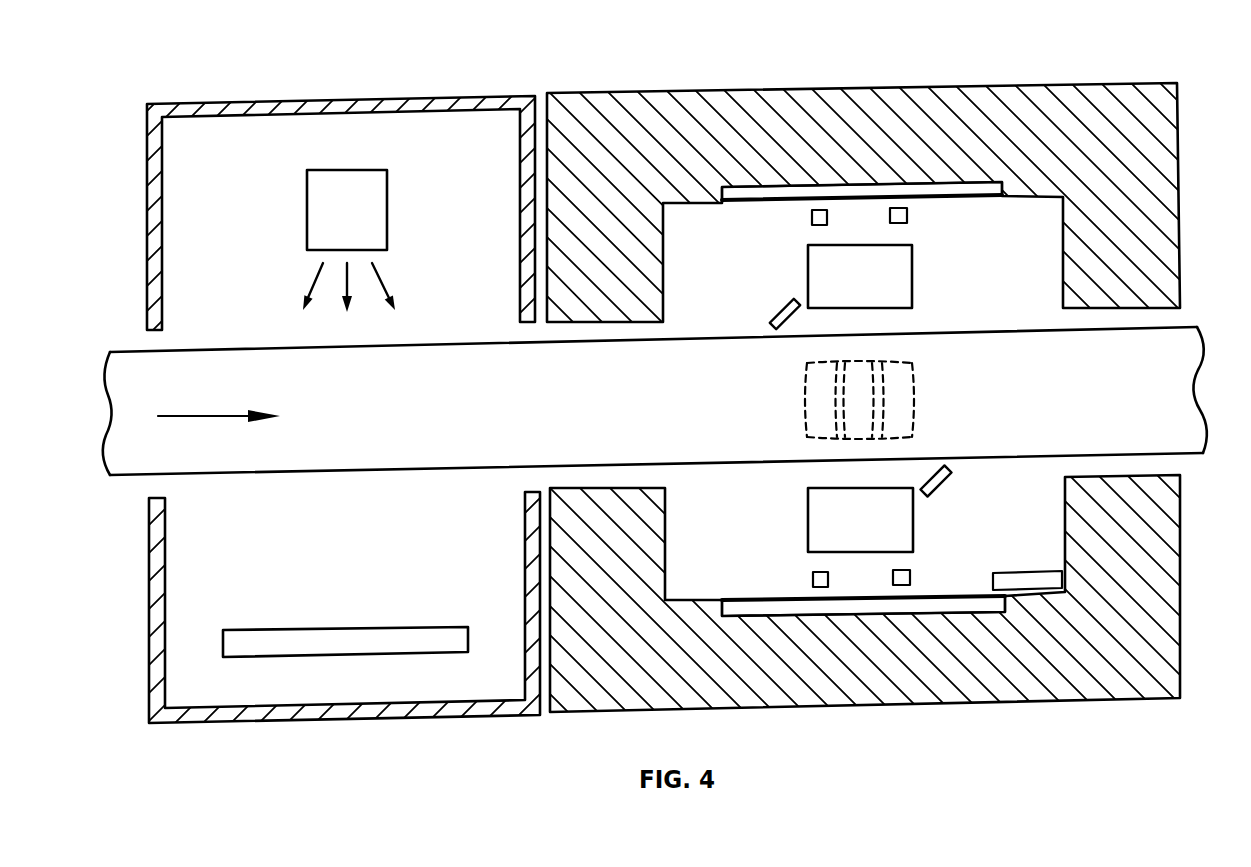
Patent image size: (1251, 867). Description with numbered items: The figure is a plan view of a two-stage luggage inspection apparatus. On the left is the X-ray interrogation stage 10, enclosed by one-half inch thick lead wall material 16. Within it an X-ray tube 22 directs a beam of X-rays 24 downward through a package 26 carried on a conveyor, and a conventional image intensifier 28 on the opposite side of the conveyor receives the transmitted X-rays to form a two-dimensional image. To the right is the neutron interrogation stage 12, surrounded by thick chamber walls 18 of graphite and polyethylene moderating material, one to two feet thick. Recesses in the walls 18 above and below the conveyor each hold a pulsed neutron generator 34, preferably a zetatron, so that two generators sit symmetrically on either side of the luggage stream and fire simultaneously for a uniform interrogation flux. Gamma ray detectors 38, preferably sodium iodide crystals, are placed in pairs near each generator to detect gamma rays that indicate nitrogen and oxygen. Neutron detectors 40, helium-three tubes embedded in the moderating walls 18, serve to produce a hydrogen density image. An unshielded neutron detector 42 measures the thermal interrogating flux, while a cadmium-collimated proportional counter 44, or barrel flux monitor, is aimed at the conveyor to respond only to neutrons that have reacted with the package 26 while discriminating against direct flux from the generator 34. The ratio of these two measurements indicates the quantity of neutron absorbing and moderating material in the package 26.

The X-ray interrogation stage 10 is at (147, 87).
The neutron interrogation stage 12 is at (547, 78).
The lead wall material 16 is at (147, 185).
The chamber walls 18 is at (1177, 187).
The X-ray tube 22 is at (308, 172).
The beam of X-rays 24 is at (373, 268).
The package 26 is at (895, 363).
The image intensifier 28 is at (393, 628).
The pulsed neutron generator 34 is at (807, 257).
The gamma ray detectors 38 is at (827, 222).
The neutron detectors 40 is at (937, 200).
The unshielded neutron detector 42 is at (1058, 570).
The cadmium-collimated helium-3 proportional counter 44 is at (788, 300).